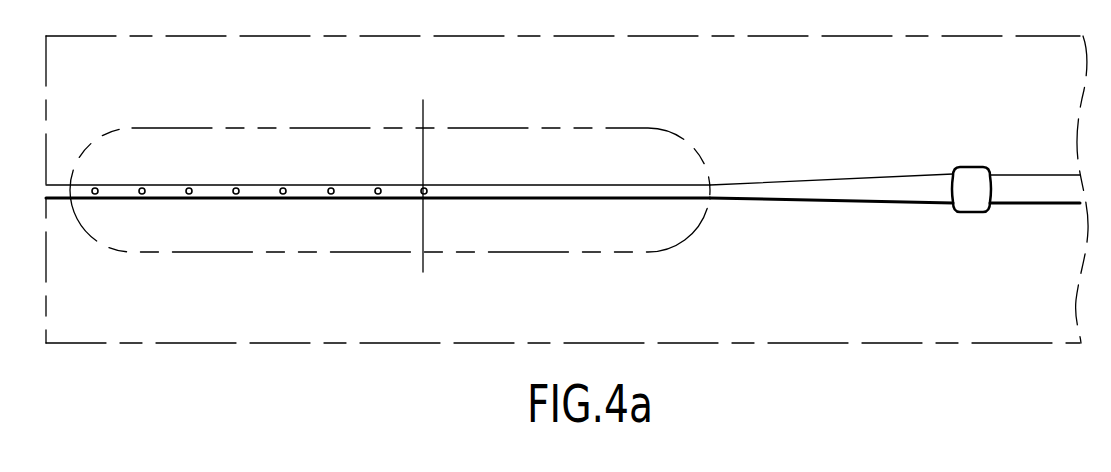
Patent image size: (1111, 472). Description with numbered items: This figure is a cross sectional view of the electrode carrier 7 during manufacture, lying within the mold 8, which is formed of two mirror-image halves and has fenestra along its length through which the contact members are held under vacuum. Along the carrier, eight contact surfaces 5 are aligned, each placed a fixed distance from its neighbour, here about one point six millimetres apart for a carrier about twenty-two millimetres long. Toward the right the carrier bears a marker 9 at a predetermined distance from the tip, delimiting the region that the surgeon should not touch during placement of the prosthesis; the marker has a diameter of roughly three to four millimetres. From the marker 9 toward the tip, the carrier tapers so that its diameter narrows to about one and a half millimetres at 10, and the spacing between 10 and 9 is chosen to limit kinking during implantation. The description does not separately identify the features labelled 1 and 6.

The marker line 1 is at (423, 112).
The contact surface 5 is at (425, 188).
The tube body 6 is at (534, 185).
The electrode carrier 7 is at (732, 185).
The mold 8 is at (650, 252).
The marker 9 is at (969, 167).
The tapered minimum diameter region 10 is at (778, 208).